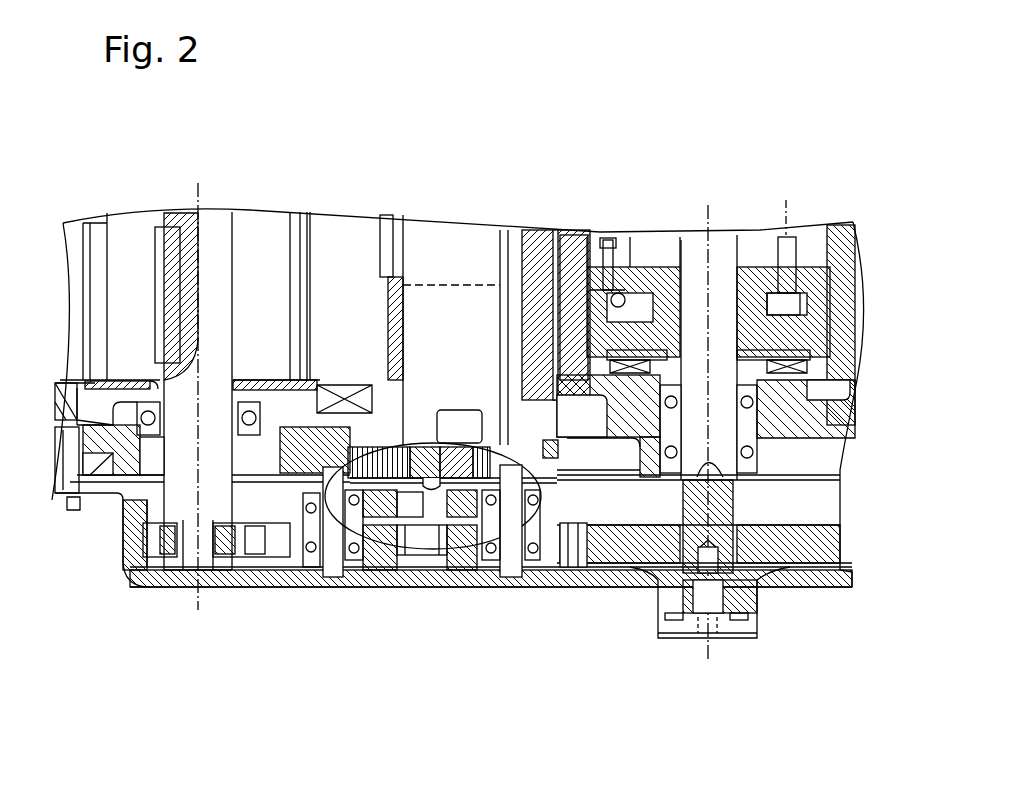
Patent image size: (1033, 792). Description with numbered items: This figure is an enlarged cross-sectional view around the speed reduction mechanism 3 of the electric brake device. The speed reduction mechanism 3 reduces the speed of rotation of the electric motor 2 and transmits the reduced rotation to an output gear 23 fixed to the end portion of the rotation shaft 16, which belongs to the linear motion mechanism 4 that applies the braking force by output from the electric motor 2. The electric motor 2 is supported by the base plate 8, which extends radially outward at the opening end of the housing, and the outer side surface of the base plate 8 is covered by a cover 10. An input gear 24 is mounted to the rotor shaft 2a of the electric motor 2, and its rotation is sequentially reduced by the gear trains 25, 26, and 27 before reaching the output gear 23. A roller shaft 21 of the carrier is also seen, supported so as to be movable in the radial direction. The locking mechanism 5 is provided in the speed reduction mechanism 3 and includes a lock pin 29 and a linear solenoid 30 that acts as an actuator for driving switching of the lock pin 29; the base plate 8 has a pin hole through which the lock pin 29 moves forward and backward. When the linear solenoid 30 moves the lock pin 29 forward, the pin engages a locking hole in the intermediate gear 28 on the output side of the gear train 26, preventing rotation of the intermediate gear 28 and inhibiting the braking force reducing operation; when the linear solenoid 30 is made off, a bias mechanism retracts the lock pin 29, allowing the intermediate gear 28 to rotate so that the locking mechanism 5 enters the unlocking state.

The electric motor 2 is at (270, 214).
The rotor shaft 2a is at (213, 213).
The linear solenoid 30 is at (458, 297).
The rotation shaft 16 is at (697, 247).
The roller shaft 21 is at (790, 230).
The linear motion mechanism 4 is at (827, 494).
The base plate 8 is at (93, 463).
The input gear 24 is at (167, 550).
The gear train 25 is at (250, 577).
The intermediate gear 28 is at (315, 550).
The speed reduction mechanism 3 is at (366, 620).
The gear train 26 is at (410, 535).
The locking mechanism 5 is at (438, 540).
The lock pin 29 is at (440, 537).
The gear train 27 is at (590, 573).
The output gear 23 is at (795, 545).
The cover 10 is at (742, 595).